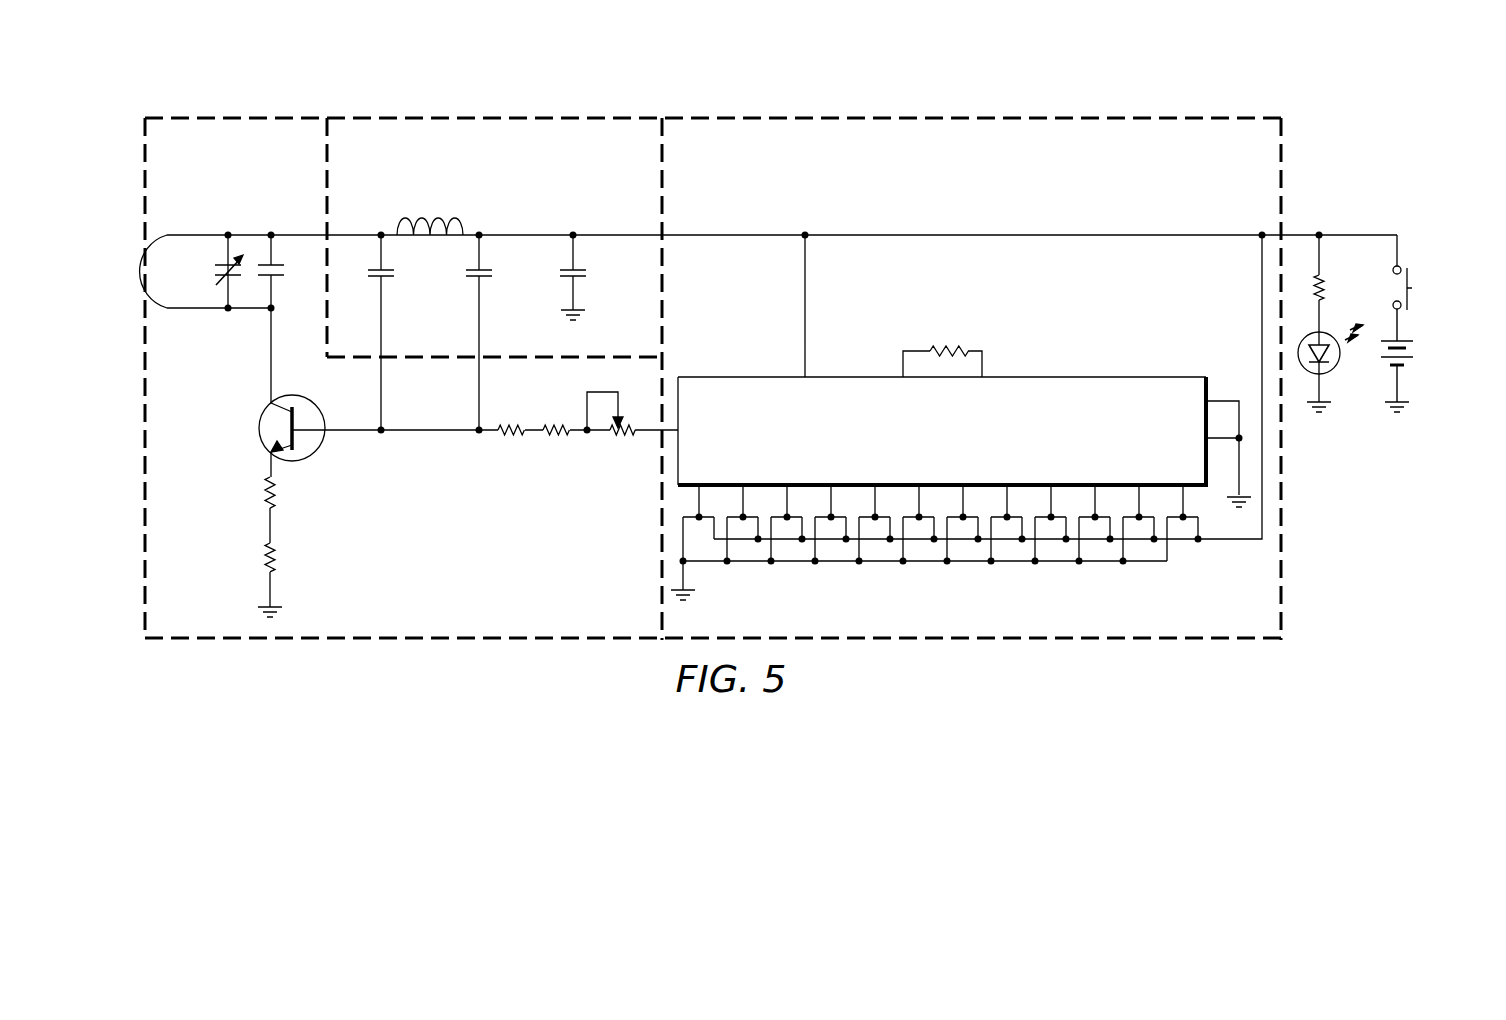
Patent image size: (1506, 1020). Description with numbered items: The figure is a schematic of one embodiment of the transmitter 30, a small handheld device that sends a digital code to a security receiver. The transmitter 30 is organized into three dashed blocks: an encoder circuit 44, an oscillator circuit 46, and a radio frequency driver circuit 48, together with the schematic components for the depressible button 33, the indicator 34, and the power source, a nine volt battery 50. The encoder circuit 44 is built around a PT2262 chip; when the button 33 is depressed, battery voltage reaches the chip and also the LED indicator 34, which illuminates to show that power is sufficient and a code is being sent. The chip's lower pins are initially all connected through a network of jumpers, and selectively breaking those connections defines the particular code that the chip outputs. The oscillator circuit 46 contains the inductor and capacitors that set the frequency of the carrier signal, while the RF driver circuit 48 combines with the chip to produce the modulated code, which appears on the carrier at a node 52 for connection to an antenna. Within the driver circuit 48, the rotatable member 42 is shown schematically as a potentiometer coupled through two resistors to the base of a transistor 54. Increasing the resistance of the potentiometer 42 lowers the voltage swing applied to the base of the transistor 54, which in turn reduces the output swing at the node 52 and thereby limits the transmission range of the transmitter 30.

The transmitter 30 is at (280, 70).
The depressible button 33 is at (1420, 273).
The indicator 34 is at (1329, 381).
The rotatable member 42 is at (590, 458).
The encoder circuit 44 is at (961, 206).
The oscillator circuit 46 is at (484, 181).
The RF driver circuit 48 is at (424, 603).
The battery 50 is at (1425, 381).
The node 52 is at (214, 310).
The transistor 54 is at (318, 451).